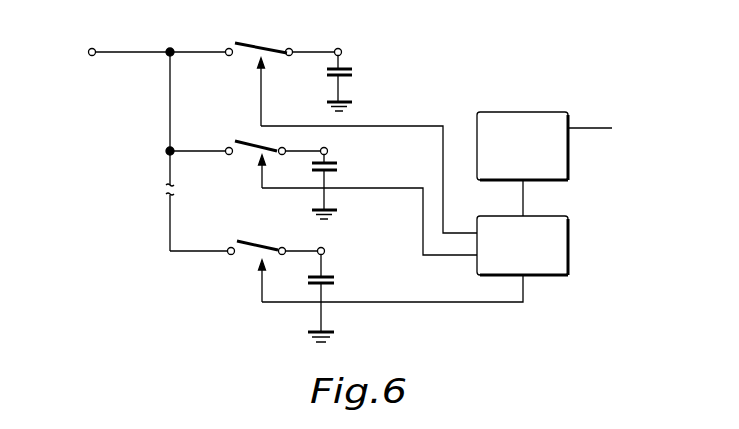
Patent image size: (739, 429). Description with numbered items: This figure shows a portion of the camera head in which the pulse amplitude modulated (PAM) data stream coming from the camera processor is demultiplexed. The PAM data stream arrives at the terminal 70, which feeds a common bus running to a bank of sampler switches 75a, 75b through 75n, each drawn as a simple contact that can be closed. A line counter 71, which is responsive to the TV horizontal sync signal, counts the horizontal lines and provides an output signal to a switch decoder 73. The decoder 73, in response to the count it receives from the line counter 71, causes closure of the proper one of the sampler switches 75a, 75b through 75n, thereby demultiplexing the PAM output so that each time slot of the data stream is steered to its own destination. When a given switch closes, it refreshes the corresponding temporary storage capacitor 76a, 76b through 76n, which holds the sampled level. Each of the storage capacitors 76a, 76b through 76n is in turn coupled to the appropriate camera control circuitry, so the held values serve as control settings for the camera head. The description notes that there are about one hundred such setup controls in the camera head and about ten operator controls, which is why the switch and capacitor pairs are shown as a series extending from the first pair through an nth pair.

The terminal 70 is at (122, 55).
The line counter 71 is at (553, 112).
The switch decoder 73 is at (571, 241).
The sampler switch 75a is at (262, 44).
The sampler switch 75b is at (243, 141).
The sampler switch 75n is at (236, 219).
The temporary storage capacitor 76a is at (355, 71).
The temporary storage capacitor 76b is at (340, 163).
The temporary storage capacitor 76n is at (345, 266).